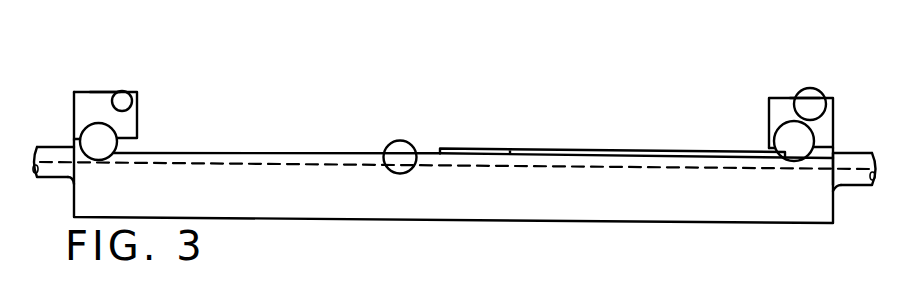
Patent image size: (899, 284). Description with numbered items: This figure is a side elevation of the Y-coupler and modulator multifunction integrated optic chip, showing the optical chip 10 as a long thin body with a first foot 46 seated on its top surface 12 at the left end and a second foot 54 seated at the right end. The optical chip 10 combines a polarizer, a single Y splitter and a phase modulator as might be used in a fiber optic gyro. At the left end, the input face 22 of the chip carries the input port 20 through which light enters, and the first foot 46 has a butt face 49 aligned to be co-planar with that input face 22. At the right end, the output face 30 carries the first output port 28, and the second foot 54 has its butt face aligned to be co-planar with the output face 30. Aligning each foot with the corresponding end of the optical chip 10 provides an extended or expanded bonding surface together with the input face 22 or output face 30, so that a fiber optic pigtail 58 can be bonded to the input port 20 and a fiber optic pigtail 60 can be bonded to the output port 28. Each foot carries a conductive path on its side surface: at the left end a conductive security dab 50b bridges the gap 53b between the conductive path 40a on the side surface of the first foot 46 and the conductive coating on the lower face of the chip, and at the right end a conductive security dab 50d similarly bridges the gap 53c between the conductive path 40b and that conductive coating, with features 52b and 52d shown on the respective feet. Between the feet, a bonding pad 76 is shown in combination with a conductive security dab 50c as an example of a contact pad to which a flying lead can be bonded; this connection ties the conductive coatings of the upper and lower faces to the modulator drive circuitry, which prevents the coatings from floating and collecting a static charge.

The optical chip 10 is at (535, 84).
The top surface 12 is at (275, 153).
The input port 20 is at (86, 152).
The input face 22 is at (73, 205).
The first output port 28 is at (842, 168).
The output face 30 is at (834, 216).
The conductive path 40a is at (123, 123).
The conductive path 40b is at (783, 112).
The first foot 46 is at (93, 102).
The butt face 49 is at (74, 107).
The conductive security dab 50b is at (100, 143).
The conductive security dab 50c is at (392, 143).
The conductive security dab 50d is at (797, 161).
The left pin 52b is at (121, 91).
The right pin 52d is at (808, 91).
The gap 53b is at (136, 153).
The right ledge 53c is at (774, 147).
The second foot 54 is at (834, 99).
The fiber optic pigtail 58 is at (53, 147).
The fiber optic pigtail 60 is at (845, 153).
The bonding pad 76 is at (440, 150).